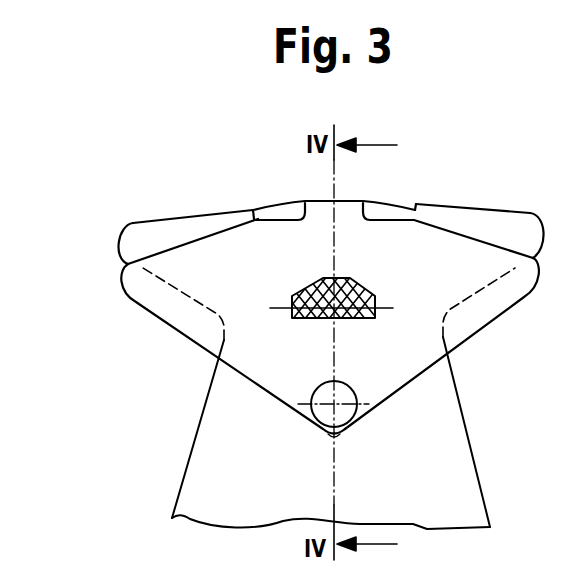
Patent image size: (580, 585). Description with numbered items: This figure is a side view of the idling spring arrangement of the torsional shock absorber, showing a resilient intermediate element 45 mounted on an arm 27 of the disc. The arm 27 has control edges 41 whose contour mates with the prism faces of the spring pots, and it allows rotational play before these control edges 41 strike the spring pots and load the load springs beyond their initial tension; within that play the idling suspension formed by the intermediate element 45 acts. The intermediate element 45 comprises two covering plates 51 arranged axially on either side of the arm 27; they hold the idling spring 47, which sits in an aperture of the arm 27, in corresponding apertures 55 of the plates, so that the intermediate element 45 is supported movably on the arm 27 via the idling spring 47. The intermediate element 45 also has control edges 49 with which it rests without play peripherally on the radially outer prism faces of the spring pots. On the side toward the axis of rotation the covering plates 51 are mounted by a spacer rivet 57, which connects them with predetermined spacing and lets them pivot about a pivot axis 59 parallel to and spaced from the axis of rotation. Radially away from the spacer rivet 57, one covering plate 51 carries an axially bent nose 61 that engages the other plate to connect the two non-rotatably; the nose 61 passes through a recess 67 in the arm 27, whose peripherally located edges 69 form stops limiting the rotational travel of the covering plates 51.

The arm 27 is at (457, 472).
The control edge 41 is at (507, 316).
The intermediate element 45 is at (243, 188).
The idling spring 47 is at (310, 287).
The control edge 49 is at (473, 336).
The covering plate 51 is at (473, 263).
The aperture 55 is at (317, 322).
The spacer rivet 57 is at (345, 392).
The pivot axis 59 is at (322, 436).
The nose 61 is at (322, 200).
The recess 67 is at (408, 208).
The edge 69 is at (303, 207).